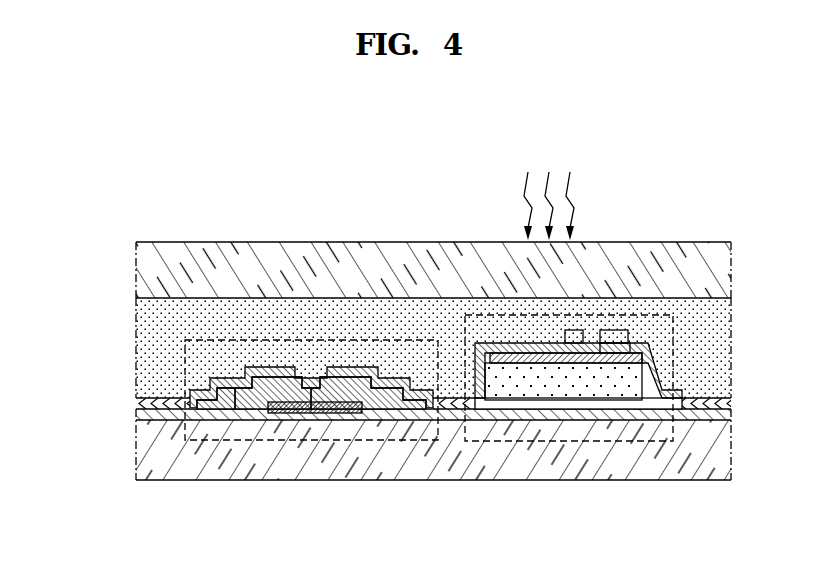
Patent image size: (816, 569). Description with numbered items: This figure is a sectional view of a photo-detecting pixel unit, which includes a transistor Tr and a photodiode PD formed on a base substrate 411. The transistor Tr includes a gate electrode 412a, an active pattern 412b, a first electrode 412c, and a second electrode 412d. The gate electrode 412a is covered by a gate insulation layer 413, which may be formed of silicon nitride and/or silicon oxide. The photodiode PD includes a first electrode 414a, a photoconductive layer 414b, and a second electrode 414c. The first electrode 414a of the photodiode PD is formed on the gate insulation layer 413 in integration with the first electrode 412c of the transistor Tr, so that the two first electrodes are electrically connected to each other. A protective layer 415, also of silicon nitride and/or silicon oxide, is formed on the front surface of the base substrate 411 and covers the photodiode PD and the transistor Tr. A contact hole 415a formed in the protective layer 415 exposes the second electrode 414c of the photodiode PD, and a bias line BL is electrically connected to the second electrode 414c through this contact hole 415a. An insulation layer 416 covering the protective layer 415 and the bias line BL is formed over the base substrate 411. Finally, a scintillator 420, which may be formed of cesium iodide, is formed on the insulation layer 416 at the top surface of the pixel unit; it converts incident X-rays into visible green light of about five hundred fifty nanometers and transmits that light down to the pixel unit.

The scintillator 420 is at (140, 269).
The insulation layer 416 is at (140, 329).
The protective layer 415 is at (142, 401).
The contact hole 415a is at (624, 346).
The gate insulation layer 413 is at (140, 413).
The base substrate 411 is at (140, 457).
The gate electrode 412a is at (312, 403).
The active pattern 412b is at (248, 403).
The first electrode 412c is at (403, 403).
The second electrode 412d is at (202, 403).
The first electrode 414a is at (579, 412).
The photoconductive layer 414b is at (617, 388).
The second electrode 414c is at (513, 367).
The transistor Tr is at (318, 340).
The photodiode PD is at (489, 314).
The bias line BL is at (621, 343).